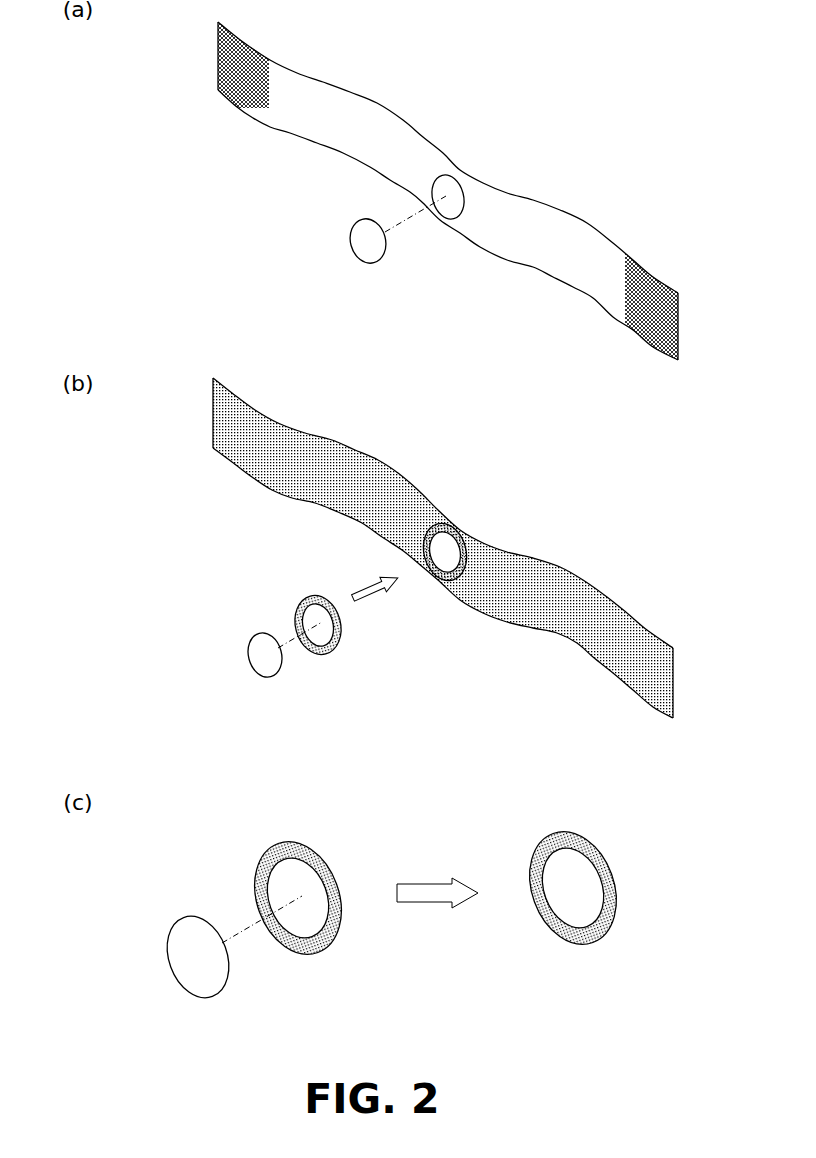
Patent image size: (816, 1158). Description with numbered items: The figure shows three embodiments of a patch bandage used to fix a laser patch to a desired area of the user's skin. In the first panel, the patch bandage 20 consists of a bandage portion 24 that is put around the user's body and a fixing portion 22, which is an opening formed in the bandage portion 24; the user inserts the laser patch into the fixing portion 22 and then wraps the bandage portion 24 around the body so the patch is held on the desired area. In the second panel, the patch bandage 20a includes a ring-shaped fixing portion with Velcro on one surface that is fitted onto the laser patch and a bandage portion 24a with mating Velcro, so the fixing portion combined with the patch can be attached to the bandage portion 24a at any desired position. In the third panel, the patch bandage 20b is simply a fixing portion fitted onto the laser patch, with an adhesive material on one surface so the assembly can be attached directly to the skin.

The patch bandage 20 is at (477, 112).
The fixing portion 22 is at (448, 180).
The bandage portion 24 is at (553, 223).
The patch bandage 20a is at (567, 458).
The bandage portion 24a is at (550, 560).
The patch bandage 20b is at (321, 904).